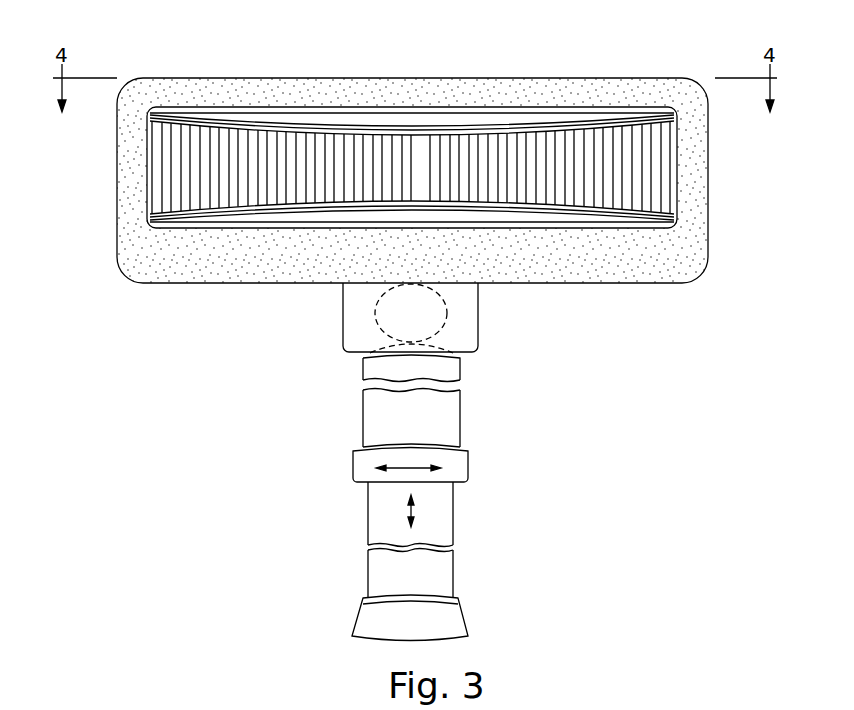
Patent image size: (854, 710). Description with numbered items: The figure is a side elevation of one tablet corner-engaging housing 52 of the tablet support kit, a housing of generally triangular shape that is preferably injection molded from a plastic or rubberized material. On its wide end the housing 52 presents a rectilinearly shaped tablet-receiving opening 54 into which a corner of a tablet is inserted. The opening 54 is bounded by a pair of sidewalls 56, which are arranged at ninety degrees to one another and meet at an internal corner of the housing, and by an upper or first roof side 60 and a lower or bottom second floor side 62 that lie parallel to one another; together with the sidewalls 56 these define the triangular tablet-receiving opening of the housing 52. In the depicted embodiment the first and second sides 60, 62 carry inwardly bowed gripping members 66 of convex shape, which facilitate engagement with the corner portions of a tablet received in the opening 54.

The tablet corner-engaging housing 52 is at (584, 66).
The tablet-receiving opening 54 is at (150, 204).
The sidewalls 56 is at (217, 141).
The first roof side 60 is at (236, 109).
The second floor side 62 is at (228, 219).
The gripping members 66 is at (434, 128).